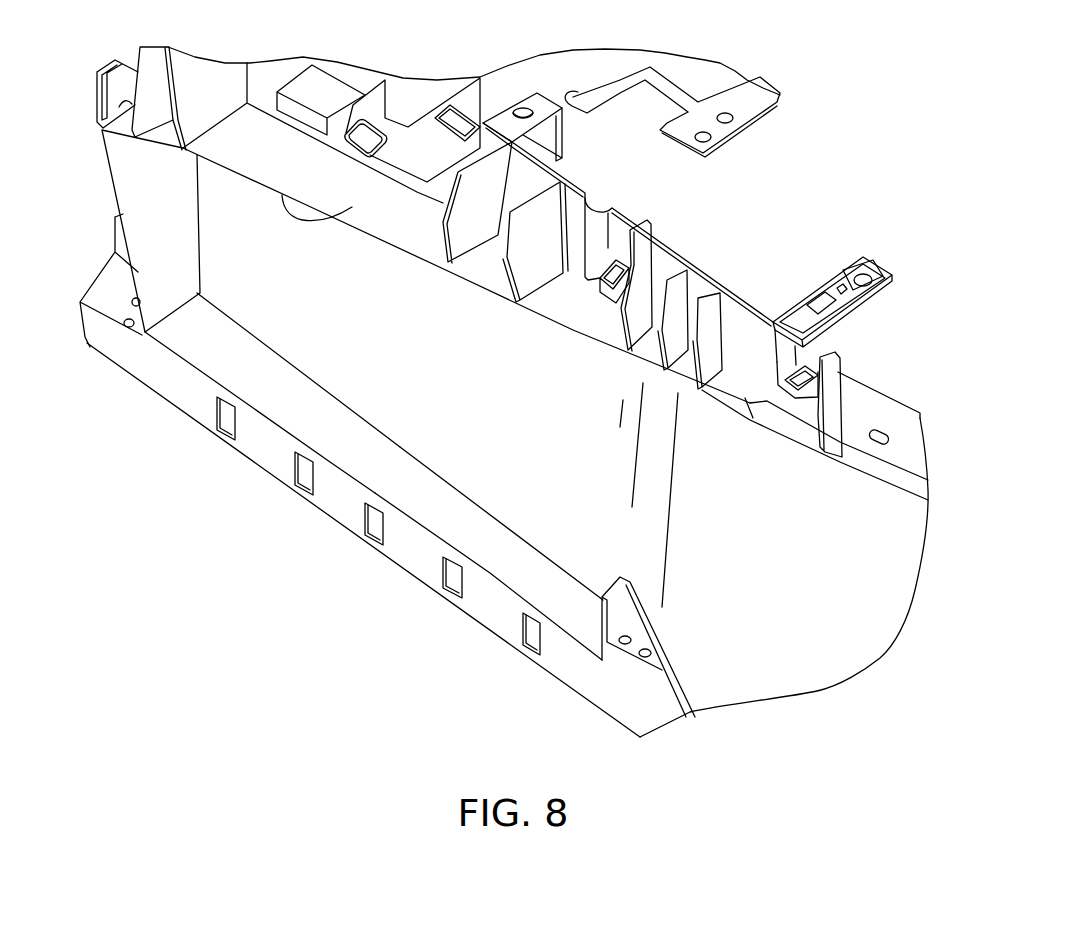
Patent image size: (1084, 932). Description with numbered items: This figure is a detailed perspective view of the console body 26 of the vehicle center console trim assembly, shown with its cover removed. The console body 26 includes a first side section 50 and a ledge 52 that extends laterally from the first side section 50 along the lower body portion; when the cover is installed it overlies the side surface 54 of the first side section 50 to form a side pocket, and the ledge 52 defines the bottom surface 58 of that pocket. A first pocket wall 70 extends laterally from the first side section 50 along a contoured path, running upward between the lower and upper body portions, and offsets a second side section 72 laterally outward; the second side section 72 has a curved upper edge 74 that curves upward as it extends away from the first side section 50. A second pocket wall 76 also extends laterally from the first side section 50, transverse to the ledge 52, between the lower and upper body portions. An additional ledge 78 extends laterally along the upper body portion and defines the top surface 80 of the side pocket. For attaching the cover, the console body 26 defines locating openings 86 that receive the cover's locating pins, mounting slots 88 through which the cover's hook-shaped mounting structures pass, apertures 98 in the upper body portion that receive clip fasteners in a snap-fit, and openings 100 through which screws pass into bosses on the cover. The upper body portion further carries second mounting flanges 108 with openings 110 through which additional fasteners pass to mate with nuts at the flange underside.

The console body 26 is at (154, 403).
The first side section 50 is at (242, 293).
The ledge 52 is at (329, 412).
The side surface 54 is at (500, 410).
The bottom surface 58 is at (543, 587).
The first pocket wall 70 is at (613, 530).
The second side section 72 is at (828, 627).
The curved upper edge 74 is at (897, 480).
The second pocket wall 76 is at (143, 173).
The additional ledge 78 is at (397, 245).
The top surface 80 is at (331, 206).
The locating openings 86 is at (127, 328).
The mounting slots 88 is at (298, 490).
The apertures 98 is at (367, 128).
The openings 100 is at (132, 299).
The second mounting flanges 108 is at (545, 107).
The openings 110 is at (515, 110).